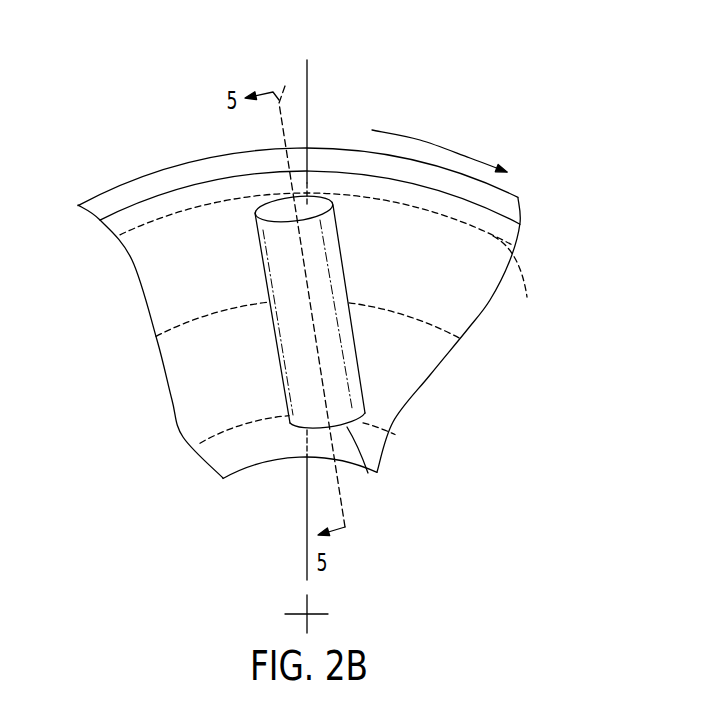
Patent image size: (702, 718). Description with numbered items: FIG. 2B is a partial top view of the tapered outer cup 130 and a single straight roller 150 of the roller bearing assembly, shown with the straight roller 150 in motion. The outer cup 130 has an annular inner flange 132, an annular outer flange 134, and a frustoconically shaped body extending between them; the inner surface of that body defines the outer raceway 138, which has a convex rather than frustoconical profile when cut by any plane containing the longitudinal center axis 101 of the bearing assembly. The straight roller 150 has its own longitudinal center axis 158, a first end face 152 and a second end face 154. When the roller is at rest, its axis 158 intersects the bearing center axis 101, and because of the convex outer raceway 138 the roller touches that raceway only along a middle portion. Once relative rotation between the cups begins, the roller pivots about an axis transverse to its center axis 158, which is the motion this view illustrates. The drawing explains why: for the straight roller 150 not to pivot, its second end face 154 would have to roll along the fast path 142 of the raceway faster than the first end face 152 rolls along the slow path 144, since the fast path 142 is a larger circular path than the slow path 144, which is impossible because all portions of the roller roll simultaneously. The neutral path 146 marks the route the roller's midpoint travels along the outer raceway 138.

The longitudinal center axis 101 is at (318, 624).
The tapered outer cup 130 is at (309, 309).
The annular inner flange 132 is at (247, 468).
The annular outer flange 134 is at (518, 197).
The outer raceway 138 is at (155, 278).
The fast path 142 is at (329, 260).
The slow path 144 is at (395, 434).
The neutral path 146 is at (462, 340).
The straight roller 150 is at (331, 315).
The first end face 152 is at (368, 473).
The second end face 154 is at (317, 197).
The longitudinal center axis 158 is at (285, 86).